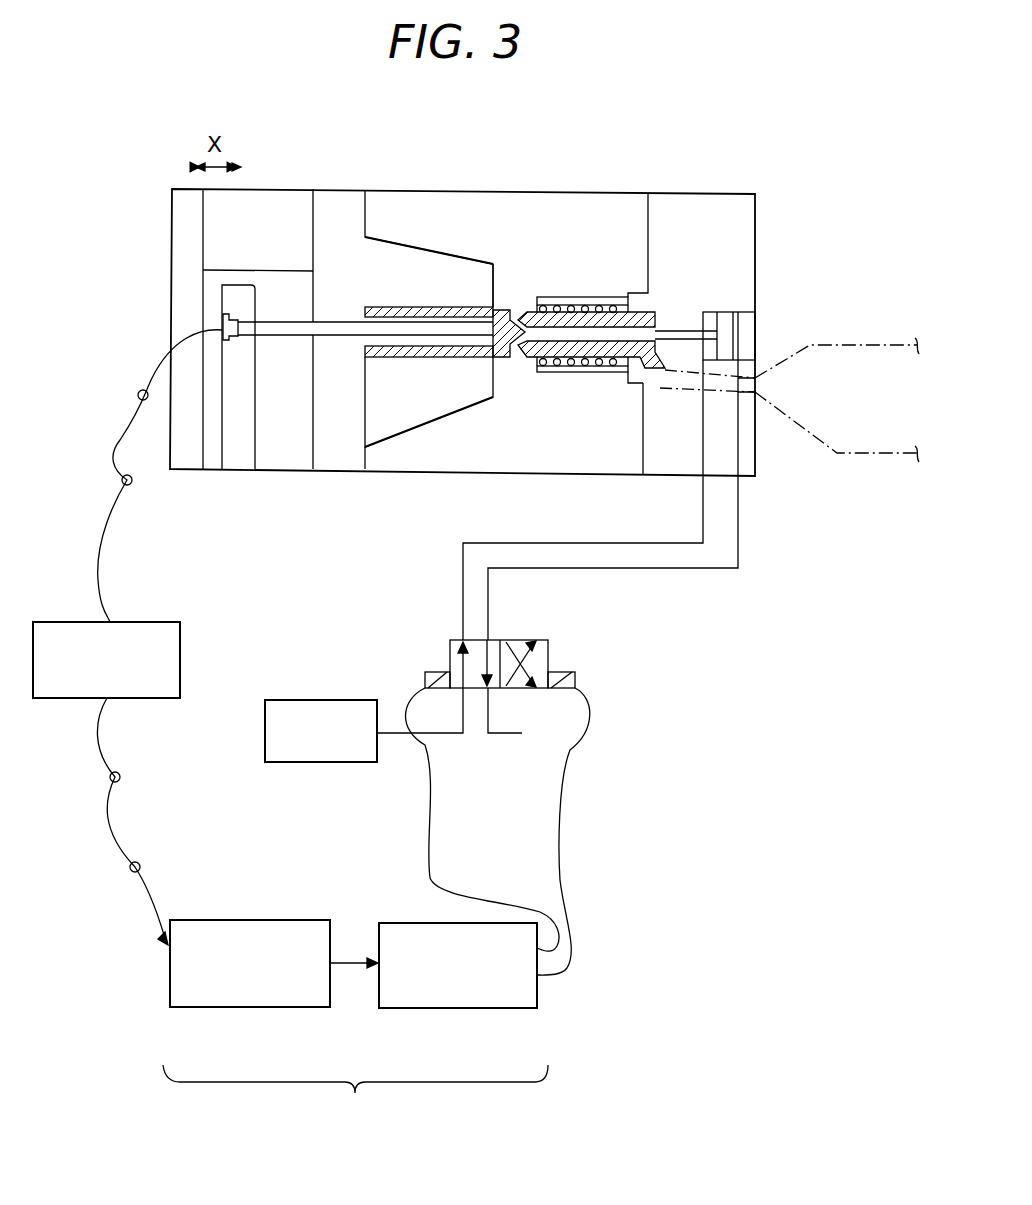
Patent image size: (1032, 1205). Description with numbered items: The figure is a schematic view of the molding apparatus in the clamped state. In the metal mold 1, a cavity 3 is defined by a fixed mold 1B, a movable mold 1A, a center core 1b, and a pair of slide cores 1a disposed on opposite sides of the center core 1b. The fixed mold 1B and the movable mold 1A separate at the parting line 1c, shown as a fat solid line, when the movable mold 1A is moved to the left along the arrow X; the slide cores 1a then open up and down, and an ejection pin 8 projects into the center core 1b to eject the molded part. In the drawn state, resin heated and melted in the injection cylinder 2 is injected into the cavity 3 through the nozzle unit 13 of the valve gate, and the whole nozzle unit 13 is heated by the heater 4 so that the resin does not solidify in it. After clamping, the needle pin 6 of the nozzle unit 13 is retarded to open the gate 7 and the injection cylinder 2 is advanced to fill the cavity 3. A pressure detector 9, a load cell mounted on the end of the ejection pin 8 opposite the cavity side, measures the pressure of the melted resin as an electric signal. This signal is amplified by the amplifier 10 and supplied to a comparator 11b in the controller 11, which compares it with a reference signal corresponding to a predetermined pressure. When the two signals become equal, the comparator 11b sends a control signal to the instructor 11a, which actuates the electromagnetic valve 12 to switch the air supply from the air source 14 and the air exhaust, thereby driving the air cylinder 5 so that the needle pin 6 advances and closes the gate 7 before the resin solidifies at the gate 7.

The metal mold 1 is at (439, 174).
The movable mold 1A is at (283, 189).
The fixed mold 1B is at (403, 189).
The slide cores 1a is at (378, 268).
The center core 1b is at (457, 322).
The parting line 1c is at (445, 247).
The injection cylinder 2 is at (820, 345).
The cavity 3 is at (425, 357).
The heater 4 is at (585, 368).
The air cylinder 5 is at (729, 310).
The needle pin 6 is at (681, 330).
The gate 7 is at (519, 307).
The ejection pin 8 is at (285, 327).
The pressure detector 9 is at (222, 325).
The amplifier 10 is at (182, 636).
The controller 11 is at (355, 1049).
The instructor 11a is at (445, 1008).
The comparator 11b is at (243, 1008).
The electromagnetic valve 12 is at (575, 680).
The nozzle unit 13 is at (568, 298).
The air source 14 is at (345, 700).